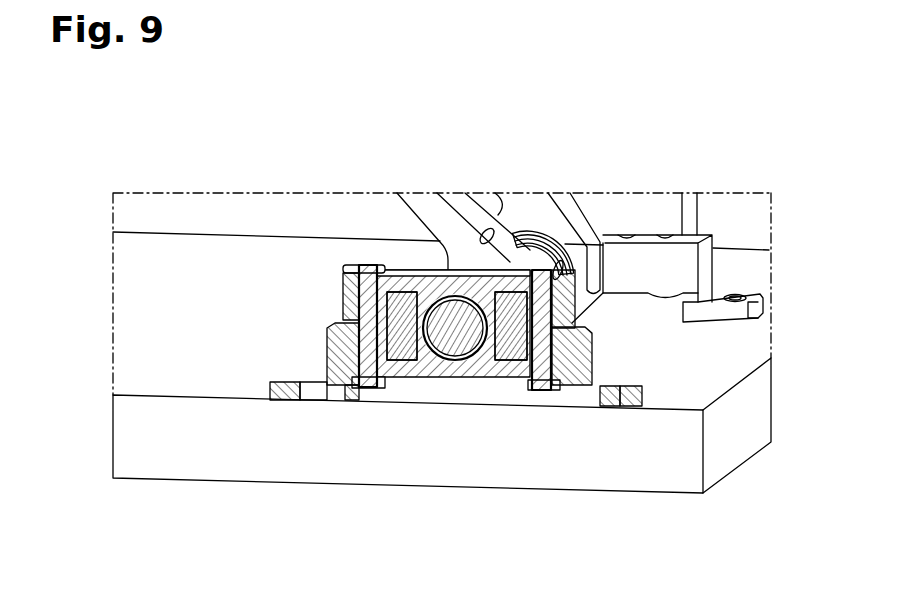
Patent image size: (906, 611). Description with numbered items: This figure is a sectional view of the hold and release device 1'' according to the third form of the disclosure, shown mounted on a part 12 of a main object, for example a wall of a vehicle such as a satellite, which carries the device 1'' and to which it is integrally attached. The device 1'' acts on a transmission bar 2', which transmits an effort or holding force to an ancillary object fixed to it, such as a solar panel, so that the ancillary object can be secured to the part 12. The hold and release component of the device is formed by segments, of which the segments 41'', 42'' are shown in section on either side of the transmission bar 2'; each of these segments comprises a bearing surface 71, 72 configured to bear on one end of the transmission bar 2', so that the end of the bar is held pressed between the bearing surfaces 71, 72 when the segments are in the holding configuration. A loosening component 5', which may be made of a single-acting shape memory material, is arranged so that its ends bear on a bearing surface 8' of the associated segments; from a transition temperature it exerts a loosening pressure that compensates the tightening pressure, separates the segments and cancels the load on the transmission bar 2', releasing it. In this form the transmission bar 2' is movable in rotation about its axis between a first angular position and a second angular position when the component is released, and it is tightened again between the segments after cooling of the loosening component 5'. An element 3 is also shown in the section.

The hold and release device 1'' is at (433, 353).
The transmission bar 2' is at (455, 417).
The shaft / bolt 3 is at (363, 304).
The loosening component 5' is at (441, 416).
The bearing surface 8' is at (655, 279).
The part of a main object 12 is at (233, 448).
The segment 41'' is at (408, 291).
The segment 42'' is at (433, 364).
The bearing surface 71 is at (438, 350).
The bearing surface 72 is at (440, 305).